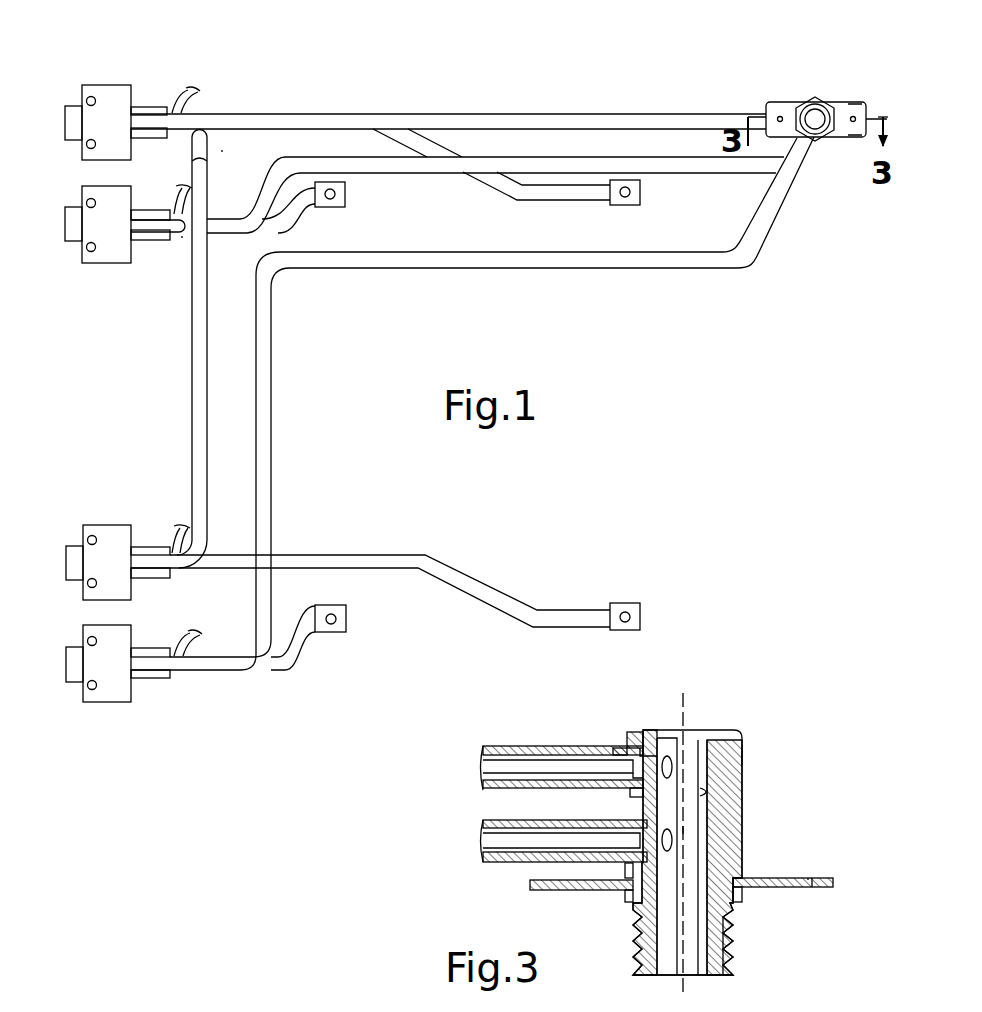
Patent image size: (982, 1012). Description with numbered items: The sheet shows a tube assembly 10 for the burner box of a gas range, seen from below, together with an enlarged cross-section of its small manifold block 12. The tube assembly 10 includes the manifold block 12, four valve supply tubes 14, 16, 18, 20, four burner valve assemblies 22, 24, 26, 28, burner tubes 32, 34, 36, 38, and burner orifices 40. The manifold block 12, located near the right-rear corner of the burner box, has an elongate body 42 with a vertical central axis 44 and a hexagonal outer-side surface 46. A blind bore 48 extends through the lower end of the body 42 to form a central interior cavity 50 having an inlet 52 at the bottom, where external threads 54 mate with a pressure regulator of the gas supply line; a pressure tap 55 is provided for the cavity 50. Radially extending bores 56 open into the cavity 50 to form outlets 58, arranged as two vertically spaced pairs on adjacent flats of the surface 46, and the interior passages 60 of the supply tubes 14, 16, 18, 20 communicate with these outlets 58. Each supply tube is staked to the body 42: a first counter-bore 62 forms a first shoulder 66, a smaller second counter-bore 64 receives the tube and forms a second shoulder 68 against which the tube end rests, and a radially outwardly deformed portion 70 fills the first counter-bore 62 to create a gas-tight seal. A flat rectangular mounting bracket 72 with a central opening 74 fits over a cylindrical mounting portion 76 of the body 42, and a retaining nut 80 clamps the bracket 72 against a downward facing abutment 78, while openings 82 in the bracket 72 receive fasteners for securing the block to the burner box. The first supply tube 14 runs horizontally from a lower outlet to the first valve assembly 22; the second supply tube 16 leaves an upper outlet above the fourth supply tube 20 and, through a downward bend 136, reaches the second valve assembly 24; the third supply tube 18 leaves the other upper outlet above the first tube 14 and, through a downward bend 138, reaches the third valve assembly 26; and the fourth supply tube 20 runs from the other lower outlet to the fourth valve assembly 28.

In FIG. 1, the tube assembly 10 is at (628, 328).
In FIG. 1, the small manifold block 12 is at (771, 99).
In FIG. 3, the small manifold block 12 is at (746, 734).
In FIG. 1, the first valve supply tube 14 is at (527, 107).
In FIG. 3, the first valve supply tube 14 is at (490, 821).
In FIG. 1, the second valve supply tube 16 is at (342, 157).
In FIG. 1, the third valve supply tube 18 is at (190, 376).
In FIG. 3, the third valve supply tube 18 is at (527, 745).
In FIG. 1, the fourth valve supply tube 20 is at (272, 372).
In FIG. 1, the first burner valve assembly 22 is at (80, 90).
In FIG. 1, the second burner valve assembly 24 is at (80, 263).
In FIG. 1, the third burner valve assembly 26 is at (82, 524).
In FIG. 1, the fourth burner valve assembly 28 is at (83, 701).
In FIG. 1, the burner tube 32 is at (492, 190).
In FIG. 1, the burner tube 34 is at (293, 223).
In FIG. 1, the burner tube 36 is at (483, 599).
In FIG. 1, the burner tube 38 is at (292, 660).
In FIG. 1, the burner orifice 40 is at (345, 195).
In FIG. 1, the elongate body 42 is at (807, 100).
In FIG. 3, the elongate body 42 is at (717, 728).
In FIG. 3, the central axis 44 is at (683, 693).
In FIG. 3, the outer-side surface 46 is at (743, 762).
In FIG. 3, the blind bore 48 is at (712, 793).
In FIG. 3, the central interior cavity 50 is at (695, 831).
In FIG. 3, the inlet 52 is at (700, 976).
In FIG. 3, the external threads 54 is at (727, 949).
In FIG. 1, the pressure tap 55 is at (825, 100).
In FIG. 3, the radially extending bore 56 is at (640, 750).
In FIG. 3, the outlet 58 is at (663, 755).
In FIG. 3, the interior passage 60 is at (497, 762).
In FIG. 3, the first counter-bore 62 is at (617, 753).
In FIG. 3, the second counter-bore 64 is at (630, 738).
In FIG. 3, the first shoulder 66 is at (630, 793).
In FIG. 3, the second shoulder 68 is at (633, 778).
In FIG. 3, the radially outwardly deformed portion 70 is at (623, 877).
In FIG. 1, the mounting bracket 72 is at (847, 101).
In FIG. 3, the mounting bracket 72 is at (827, 879).
In FIG. 3, the central opening 74 is at (737, 890).
In FIG. 3, the mounting portion 76 is at (630, 889).
In FIG. 3, the abutment 78 is at (740, 893).
In FIG. 3, the retaining nut 80 is at (630, 904).
In FIG. 1, the opening 82 is at (853, 125).
In FIG. 3, the opening 82 is at (808, 877).
In FIG. 1, the downward bend 136 is at (181, 236).
In FIG. 1, the downward bend 138 is at (208, 182).